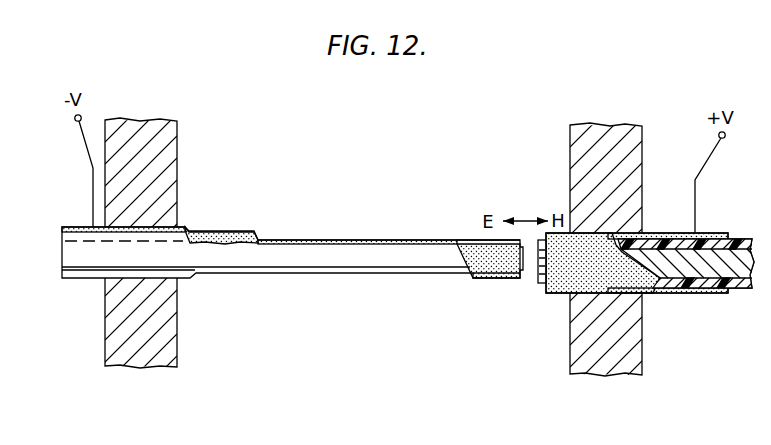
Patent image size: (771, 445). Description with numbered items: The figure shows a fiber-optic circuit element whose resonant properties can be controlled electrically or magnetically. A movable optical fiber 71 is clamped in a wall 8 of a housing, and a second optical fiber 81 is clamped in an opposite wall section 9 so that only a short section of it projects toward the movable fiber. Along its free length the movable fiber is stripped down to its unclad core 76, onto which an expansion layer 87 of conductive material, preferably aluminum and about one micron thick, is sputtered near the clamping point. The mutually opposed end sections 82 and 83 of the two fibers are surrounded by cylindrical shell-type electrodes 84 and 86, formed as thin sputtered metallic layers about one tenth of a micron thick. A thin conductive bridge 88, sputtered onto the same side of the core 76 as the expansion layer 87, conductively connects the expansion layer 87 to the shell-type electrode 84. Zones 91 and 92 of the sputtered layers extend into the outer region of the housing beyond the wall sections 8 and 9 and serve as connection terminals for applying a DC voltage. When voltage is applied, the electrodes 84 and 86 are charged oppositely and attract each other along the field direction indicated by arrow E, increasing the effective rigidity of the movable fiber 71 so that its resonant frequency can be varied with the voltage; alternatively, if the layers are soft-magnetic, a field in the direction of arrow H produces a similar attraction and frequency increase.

The wall 8 is at (163, 148).
The opposite wall section 9 is at (630, 152).
The movable optical fiber 71 is at (303, 238).
The unclad core 76 is at (398, 255).
The optical fiber 81 is at (742, 230).
The end section 82 is at (495, 280).
The end section 83 is at (560, 292).
The shell-type electrode 84 is at (472, 245).
The shell-type electrode 86 is at (573, 247).
The expansion layer 87 is at (220, 228).
The conductive bridge 88 is at (345, 241).
The zone 91 is at (78, 228).
The zone 92 is at (660, 233).